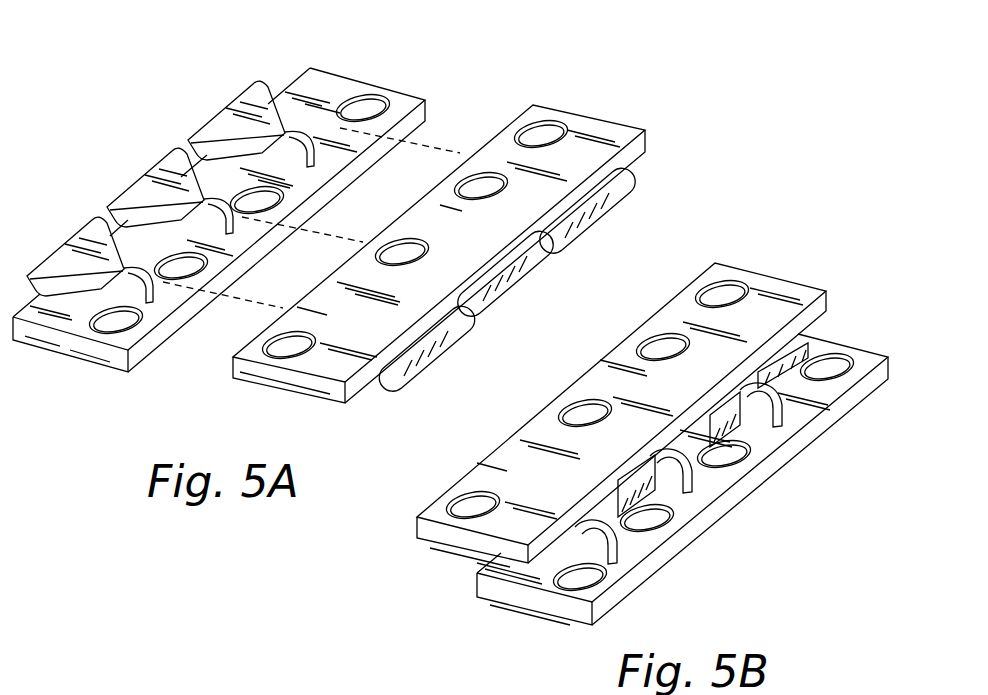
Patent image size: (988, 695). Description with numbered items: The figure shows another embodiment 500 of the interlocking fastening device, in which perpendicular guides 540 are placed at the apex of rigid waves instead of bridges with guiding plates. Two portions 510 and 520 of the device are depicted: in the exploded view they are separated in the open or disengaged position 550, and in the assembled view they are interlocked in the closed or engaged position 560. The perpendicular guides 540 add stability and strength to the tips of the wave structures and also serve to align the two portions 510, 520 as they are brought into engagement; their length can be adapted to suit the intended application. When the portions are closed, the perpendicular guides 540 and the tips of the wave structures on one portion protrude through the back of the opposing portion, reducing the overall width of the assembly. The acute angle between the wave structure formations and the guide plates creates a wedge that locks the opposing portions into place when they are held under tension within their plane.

In FIG. 5A, the embodiment 500 is at (773, 81).
In FIG. 5A, the portion 510 is at (407, 72).
In FIG. 5A, the portion 520 is at (589, 95).
In FIG. 5A, the perpendicular guides 540 is at (292, 130).
In FIG. 5B, the perpendicular guides 540 is at (761, 418).
In FIG. 5A, the open or disengaged position 550 is at (203, 217).
In FIG. 5B, the closed or engaged position 560 is at (674, 405).